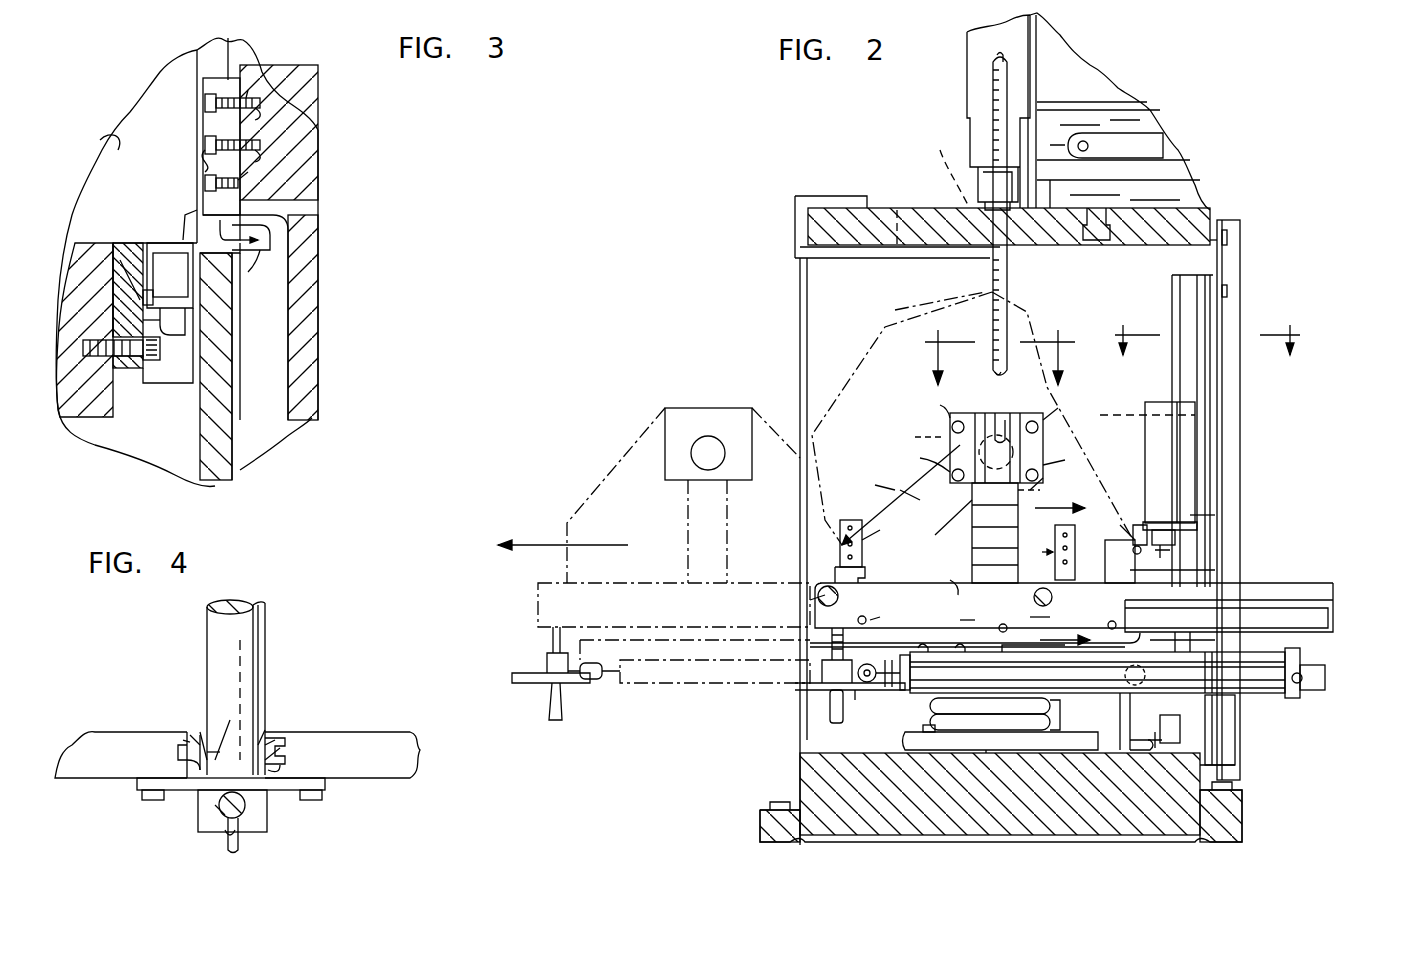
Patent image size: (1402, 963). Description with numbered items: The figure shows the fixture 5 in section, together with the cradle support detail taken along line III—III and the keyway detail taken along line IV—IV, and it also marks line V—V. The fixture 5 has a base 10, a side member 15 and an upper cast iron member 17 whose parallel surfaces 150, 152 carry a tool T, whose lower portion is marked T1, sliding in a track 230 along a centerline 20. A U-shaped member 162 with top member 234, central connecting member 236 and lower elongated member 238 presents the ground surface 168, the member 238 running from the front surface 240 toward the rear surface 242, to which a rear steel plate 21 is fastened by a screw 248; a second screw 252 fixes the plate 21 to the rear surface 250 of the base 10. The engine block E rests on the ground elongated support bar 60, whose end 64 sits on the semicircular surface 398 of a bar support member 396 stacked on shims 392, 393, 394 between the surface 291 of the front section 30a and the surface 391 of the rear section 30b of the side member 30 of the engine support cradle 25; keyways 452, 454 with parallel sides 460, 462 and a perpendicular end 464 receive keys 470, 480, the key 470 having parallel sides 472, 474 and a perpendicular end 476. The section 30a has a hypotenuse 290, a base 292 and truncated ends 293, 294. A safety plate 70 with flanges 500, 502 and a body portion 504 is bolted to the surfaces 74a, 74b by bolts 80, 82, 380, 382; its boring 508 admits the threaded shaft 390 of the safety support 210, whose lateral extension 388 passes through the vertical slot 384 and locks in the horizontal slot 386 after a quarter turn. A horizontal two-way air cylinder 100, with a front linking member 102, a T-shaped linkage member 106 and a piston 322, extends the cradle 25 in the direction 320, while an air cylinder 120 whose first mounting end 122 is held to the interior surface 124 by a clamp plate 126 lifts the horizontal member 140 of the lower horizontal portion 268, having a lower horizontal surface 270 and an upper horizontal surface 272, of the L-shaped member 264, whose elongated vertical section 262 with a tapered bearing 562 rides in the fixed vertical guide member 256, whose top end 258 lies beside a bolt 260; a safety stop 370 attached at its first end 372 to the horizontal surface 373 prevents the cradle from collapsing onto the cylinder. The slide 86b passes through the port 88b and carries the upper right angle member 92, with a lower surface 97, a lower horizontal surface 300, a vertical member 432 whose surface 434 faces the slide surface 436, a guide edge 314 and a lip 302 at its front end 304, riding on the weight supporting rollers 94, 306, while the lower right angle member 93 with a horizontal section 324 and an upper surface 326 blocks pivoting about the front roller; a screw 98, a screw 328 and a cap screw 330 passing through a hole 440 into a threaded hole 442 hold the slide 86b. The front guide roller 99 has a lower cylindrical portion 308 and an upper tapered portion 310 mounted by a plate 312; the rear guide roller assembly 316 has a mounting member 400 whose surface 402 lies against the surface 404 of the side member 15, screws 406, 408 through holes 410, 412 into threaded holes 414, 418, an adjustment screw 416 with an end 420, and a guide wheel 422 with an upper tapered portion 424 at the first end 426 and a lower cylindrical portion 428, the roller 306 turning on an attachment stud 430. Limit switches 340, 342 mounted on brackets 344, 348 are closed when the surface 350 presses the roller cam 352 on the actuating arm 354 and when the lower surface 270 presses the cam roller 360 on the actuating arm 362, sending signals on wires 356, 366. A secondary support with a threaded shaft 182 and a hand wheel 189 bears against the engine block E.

In FIG. 2, the machine tool 5 is at (1210, 158).
In FIG. 2, the base 10 is at (895, 825).
In FIG. 3, the frame wall 15 is at (300, 118).
In FIG. 2, the bed 17 is at (808, 236).
In FIG. 2, the spindle axis 20 is at (937, 169).
In FIG. 2, the end plate 21 is at (1232, 250).
In FIG. 2, the pedestal 25 is at (708, 493).
In FIG. 2, the workpiece carrier 30 is at (1045, 428).
In FIG. 4, the carrier plate 30a is at (95, 735).
In FIG. 2, the carrier plate 30a is at (919, 485).
In FIG. 3, the carrier plate 30b is at (100, 165).
In FIG. 4, the carrier plate 30b is at (412, 752).
In FIG. 2, the carrier plate 30b is at (1055, 475).
In FIG. 4, the pin 60 is at (248, 603).
In FIG. 2, the pin 60 is at (1013, 448).
In FIG. 4, the pin shoulder 64 is at (208, 715).
In FIG. 4, the base plate 70 is at (198, 818).
In FIG. 4, the plate edge 74a is at (95, 778).
In FIG. 2, the plate edge 74a is at (870, 479).
In FIG. 3, the plate edge 74b is at (110, 136).
In FIG. 4, the plate edge 74b is at (395, 778).
In FIG. 4, the clamp 80 is at (150, 800).
In FIG. 2, the clamp 80 is at (950, 428).
In FIG. 2, the clamp groove 82 is at (917, 456).
In FIG. 3, the rail 86b is at (115, 250).
In FIG. 2, the rail 86b is at (812, 643).
In FIG. 2, the rail 88b is at (1195, 522).
In FIG. 3, the slide 92 is at (135, 245).
In FIG. 2, the slide 92 is at (928, 585).
In FIG. 3, the slide bar 93 is at (143, 321).
In FIG. 2, the slide bar 93 is at (1328, 620).
In FIG. 2, the stop 94 is at (790, 618).
In FIG. 2, the slot 97 is at (945, 573).
In FIG. 2, the slot 98 is at (888, 613).
In FIG. 2, the stop 99 is at (822, 590).
In FIG. 2, the cylinder 100 is at (1280, 650).
In FIG. 2, the bracket 102 is at (822, 706).
In FIG. 2, the pin 106 is at (862, 695).
In FIG. 2, the bellows 120 is at (1045, 715).
In FIG. 2, the bellows end 122 is at (1065, 728).
In FIG. 2, the base plate 124 is at (812, 750).
In FIG. 2, the base 126 is at (985, 755).
In FIG. 2, the coupling 140 is at (924, 650).
In FIG. 2, the spindle 150 is at (920, 307).
In FIG. 2, the spindle axis 152 is at (898, 245).
In FIG. 2, the spindle head 162 is at (798, 222).
In FIG. 2, the bed edge 168 is at (838, 262).
In FIG. 2, the guide rail 182 is at (810, 648).
In FIG. 2, the feed cylinder 189 is at (808, 682).
In FIG. 2, the feed direction 210 is at (1012, 282).
In FIG. 2, the lug 230 is at (1107, 208).
In FIG. 2, the flange 234 is at (818, 196).
In FIG. 2, the lip 236 is at (797, 226).
In FIG. 2, the column 238 is at (800, 256).
In FIG. 2, the bed surface 240 is at (808, 232).
In FIG. 2, the plate edge 242 is at (1212, 220).
In FIG. 2, the tab 248 is at (1230, 235).
In FIG. 2, the foot 250 is at (1205, 790).
In FIG. 2, the support 252 is at (1228, 766).
In FIG. 2, the guide 256 is at (1165, 298).
In FIG. 2, the tab 258 is at (1240, 285).
In FIG. 2, the tab 260 is at (1230, 290).
In FIG. 2, the block 262 is at (1160, 402).
In FIG. 2, the block face 264 is at (1182, 448).
In FIG. 2, the bracket 268 is at (1180, 652).
In FIG. 2, the actuator cylinder 270 is at (1105, 688).
In FIG. 2, the hole 272 is at (1024, 619).
In FIG. 2, the rod 290 is at (870, 515).
In FIG. 4, the rod end 291 is at (200, 735).
In FIG. 2, the rod end 291 is at (943, 518).
In FIG. 2, the rod 292 is at (1008, 640).
In FIG. 4, the head 293 is at (110, 735).
In FIG. 2, the head 293 is at (948, 408).
In FIG. 2, the clevis 294 is at (880, 690).
In FIG. 3, the bracket 300 is at (165, 248).
In FIG. 2, the bracket 302 is at (812, 598).
In FIG. 2, the plate 304 is at (810, 592).
In FIG. 3, the bolt 306 is at (188, 318).
In FIG. 2, the bolt 306 is at (1034, 597).
In FIG. 2, the foot 308 is at (862, 575).
In FIG. 2, the block 310 is at (881, 529).
In FIG. 2, the block 312 is at (838, 540).
In FIG. 3, the stop block 314 is at (195, 235).
In FIG. 2, the stop block 314 is at (1112, 580).
In FIG. 3, the switch 316 is at (185, 119).
In FIG. 2, the switch 316 is at (785, 500).
In FIG. 2, the handwheel unit 320 is at (530, 548).
In FIG. 2, the bracket 322 is at (911, 721).
In FIG. 3, the column 324 is at (232, 350).
In FIG. 2, the column 324 is at (1330, 612).
In FIG. 3, the column 326 is at (232, 335).
In FIG. 2, the column 326 is at (1290, 600).
In FIG. 2, the slot 328 is at (954, 613).
In FIG. 3, the gear 330 is at (160, 360).
In FIG. 2, the gear 330 is at (1118, 610).
In FIG. 2, the plate 340 is at (1175, 535).
In FIG. 2, the screw 342 is at (1175, 740).
In FIG. 2, the plate 344 is at (1215, 520).
In FIG. 2, the block 348 is at (1180, 720).
In FIG. 2, the plate 350 is at (1215, 570).
In FIG. 2, the pin 352 is at (1112, 539).
In FIG. 2, the bracket 354 is at (1140, 525).
In FIG. 2, the screw 356 is at (1170, 550).
In FIG. 2, the hole 360 is at (1127, 676).
In FIG. 2, the flange 362 is at (1208, 690).
In FIG. 2, the pin 366 is at (1160, 752).
In FIG. 2, the rod end 370 is at (1140, 755).
In FIG. 2, the rod 372 is at (1110, 752).
In FIG. 2, the base 373 is at (1098, 755).
In FIG. 4, the pin 380 is at (312, 800).
In FIG. 2, the pin 380 is at (1070, 402).
In FIG. 2, the hole 382 is at (1077, 454).
In FIG. 4, the spring 384 is at (235, 845).
In FIG. 2, the spring 384 is at (993, 412).
In FIG. 2, the screw 386 is at (1030, 420).
In FIG. 4, the pin 388 is at (245, 850).
In FIG. 2, the pin 388 is at (990, 370).
In FIG. 4, the scale 390 is at (250, 820).
In FIG. 2, the scale 390 is at (990, 280).
In FIG. 4, the switch 391 is at (290, 769).
In FIG. 2, the switch 391 is at (1045, 552).
In FIG. 2, the stem 392 is at (972, 500).
In FIG. 2, the stem section 393 is at (995, 532).
In FIG. 2, the stem section 394 is at (995, 560).
In FIG. 4, the notch 396 is at (272, 730).
In FIG. 2, the notch 396 is at (1040, 492).
In FIG. 4, the notch 398 is at (262, 740).
In FIG. 2, the notch 398 is at (910, 433).
In FIG. 3, the wall 400 is at (230, 78).
In FIG. 3, the plate 402 is at (240, 90).
In FIG. 3, the spring 404 is at (203, 162).
In FIG. 3, the screw 406 is at (205, 108).
In FIG. 3, the screw 408 is at (205, 146).
In FIG. 3, the nut 410 is at (258, 112).
In FIG. 3, the nut 412 is at (257, 152).
In FIG. 3, the hole 414 is at (250, 95).
In FIG. 3, the screw 416 is at (205, 184).
In FIG. 3, the wall 418 is at (322, 138).
In FIG. 3, the stop 420 is at (255, 180).
In FIG. 3, the direction 422 is at (262, 244).
In FIG. 3, the channel 424 is at (270, 230).
In FIG. 3, the bracket 426 is at (220, 217).
In FIG. 3, the lip 428 is at (265, 267).
In FIG. 3, the face 430 is at (240, 300).
In FIG. 3, the rail 432 is at (130, 295).
In FIG. 3, the wall 434 is at (118, 228).
In FIG. 3, the key 436 is at (143, 300).
In FIG. 3, the housing 440 is at (140, 385).
In FIG. 3, the screw 442 is at (100, 358).
In FIG. 4, the surface 452 is at (135, 792).
In FIG. 4, the notch 454 is at (292, 749).
In FIG. 4, the edge 460 is at (183, 742).
In FIG. 4, the foot 462 is at (160, 800).
In FIG. 4, the notch 464 is at (178, 752).
In FIG. 4, the bore 470 is at (235, 705).
In FIG. 4, the edge 472 is at (190, 735).
In FIG. 4, the surface 474 is at (180, 766).
In FIG. 4, the bore 476 is at (213, 753).
In FIG. 4, the edge 480 is at (282, 748).
In FIG. 4, the plate 500 is at (135, 785).
In FIG. 4, the plate 502 is at (320, 790).
In FIG. 4, the body 504 is at (262, 815).
In FIG. 4, the bore 508 is at (220, 820).
In FIG. 2, the line 562 is at (1146, 416).
In FIG. 2, the tool T is at (975, 70).
In FIG. 2, the tool tip T1 is at (980, 190).
In FIG. 2, the envelope E is at (855, 337).
In FIG. 2, the section line IV is at (1005, 358).
In FIG. 2, the section line V is at (1204, 344).
In FIG. 2, the section line III is at (1068, 571).